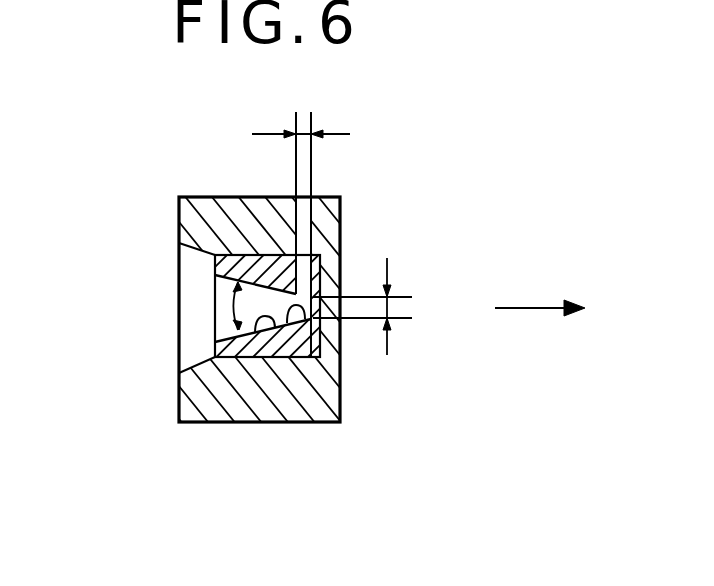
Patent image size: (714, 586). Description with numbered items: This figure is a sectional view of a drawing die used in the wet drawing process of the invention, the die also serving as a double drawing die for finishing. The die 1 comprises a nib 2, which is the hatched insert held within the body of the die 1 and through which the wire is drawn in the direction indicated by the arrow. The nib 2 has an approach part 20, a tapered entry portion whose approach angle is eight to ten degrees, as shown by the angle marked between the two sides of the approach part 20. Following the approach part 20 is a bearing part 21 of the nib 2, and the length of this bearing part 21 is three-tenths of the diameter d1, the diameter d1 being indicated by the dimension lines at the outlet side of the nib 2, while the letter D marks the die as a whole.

The die body 1 is at (228, 205).
The nozzle insert 2 is at (325, 242).
The first projection 20 is at (263, 330).
The second projection 21 is at (293, 322).
The outlet gap height d1 is at (391, 308).
The die assembly D is at (161, 391).